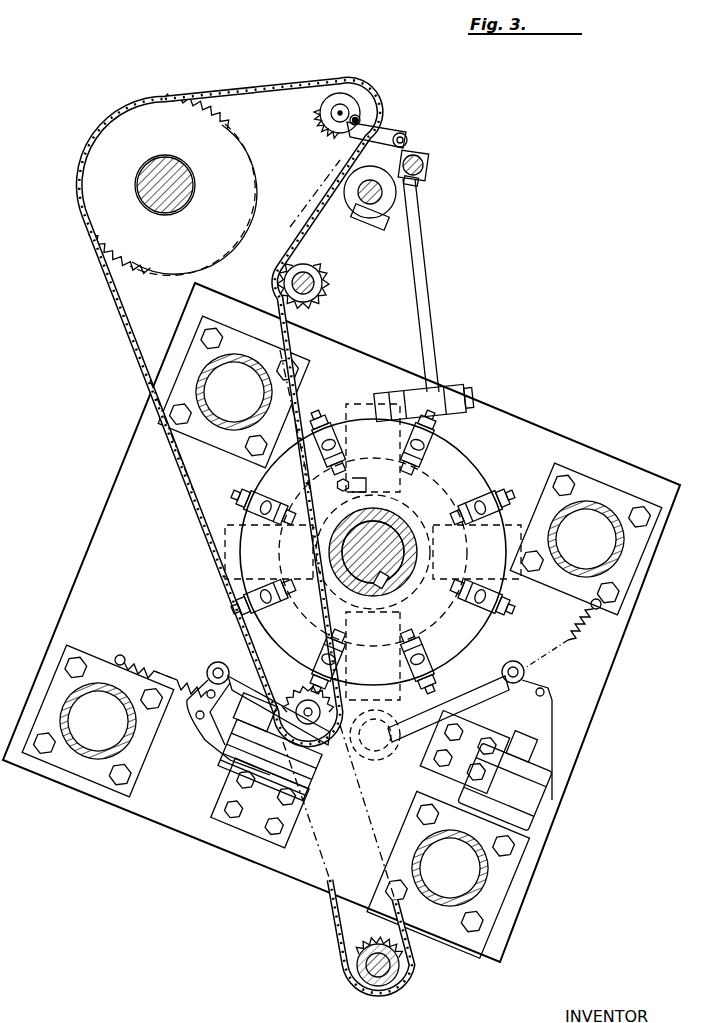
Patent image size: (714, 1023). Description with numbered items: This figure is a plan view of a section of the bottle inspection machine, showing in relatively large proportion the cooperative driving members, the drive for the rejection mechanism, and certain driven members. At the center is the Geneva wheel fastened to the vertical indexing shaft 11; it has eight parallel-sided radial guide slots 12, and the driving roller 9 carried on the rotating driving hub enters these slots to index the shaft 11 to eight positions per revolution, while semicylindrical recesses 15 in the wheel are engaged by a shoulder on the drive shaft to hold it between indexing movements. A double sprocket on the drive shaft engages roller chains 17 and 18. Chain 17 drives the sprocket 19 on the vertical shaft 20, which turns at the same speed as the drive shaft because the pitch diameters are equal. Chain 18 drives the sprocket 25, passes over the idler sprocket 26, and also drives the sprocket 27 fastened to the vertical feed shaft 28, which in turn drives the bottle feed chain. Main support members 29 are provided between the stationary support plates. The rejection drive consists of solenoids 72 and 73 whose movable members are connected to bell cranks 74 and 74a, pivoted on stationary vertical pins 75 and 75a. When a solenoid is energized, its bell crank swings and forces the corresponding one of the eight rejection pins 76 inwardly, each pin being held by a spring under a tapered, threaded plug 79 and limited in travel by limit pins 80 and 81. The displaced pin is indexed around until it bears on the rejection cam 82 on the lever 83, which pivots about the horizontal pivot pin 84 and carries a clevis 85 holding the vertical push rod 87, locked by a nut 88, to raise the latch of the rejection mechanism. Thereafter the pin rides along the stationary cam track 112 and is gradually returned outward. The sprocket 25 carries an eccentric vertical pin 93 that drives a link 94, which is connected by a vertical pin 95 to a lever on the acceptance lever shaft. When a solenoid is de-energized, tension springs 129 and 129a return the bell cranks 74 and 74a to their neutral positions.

The driving roller 9 is at (380, 755).
The vertical indexing shaft 11 is at (405, 558).
The radial guide slots 12 is at (462, 540).
The semicylindrical recesses 15 is at (364, 582).
The roller chain 17 is at (338, 952).
The roller chain 18 is at (235, 536).
The sprocket 19 is at (366, 940).
The vertical shaft 20 is at (398, 948).
The sprocket 25 is at (332, 143).
The idler sprocket 26 is at (320, 262).
The sprocket 27 is at (143, 272).
The vertical feed shaft 28 is at (183, 184).
The main support members 29 is at (262, 382).
The solenoid 72 is at (548, 810).
The solenoid 73 is at (312, 790).
The bell crank 74 is at (218, 700).
The bell crank 74a is at (540, 698).
The vertical pin 75 is at (218, 664).
The vertical pin 75a is at (524, 662).
The rejection pins 76 is at (318, 410).
The tapered, threaded plug 79 is at (345, 438).
The limit pin 80 is at (347, 425).
The limit pin 81 is at (462, 596).
The rejection cam 82 is at (432, 470).
The lever 83 is at (436, 265).
The horizontal pivot pin 84 is at (468, 395).
The clevis 85 is at (423, 178).
The vertical push rod 87 is at (433, 150).
The nut 88 is at (420, 152).
The vertical pin 93 is at (360, 118).
The link 94 is at (390, 125).
The vertical pin 95 is at (404, 135).
The stationary cam track 112 is at (367, 485).
The tension spring 129 is at (140, 662).
The tension spring 129a is at (580, 640).